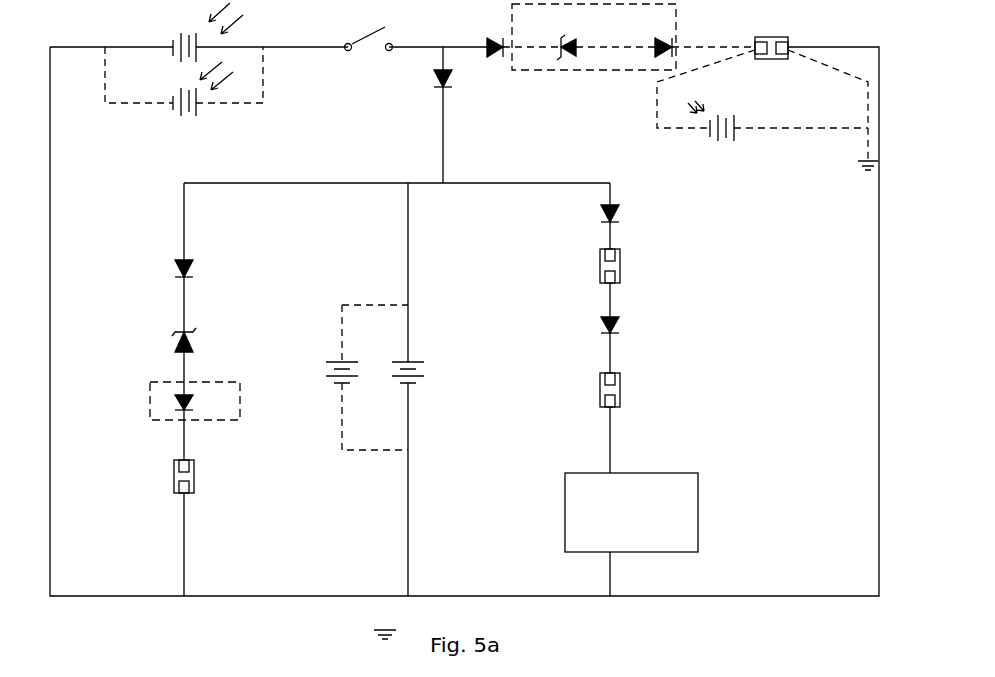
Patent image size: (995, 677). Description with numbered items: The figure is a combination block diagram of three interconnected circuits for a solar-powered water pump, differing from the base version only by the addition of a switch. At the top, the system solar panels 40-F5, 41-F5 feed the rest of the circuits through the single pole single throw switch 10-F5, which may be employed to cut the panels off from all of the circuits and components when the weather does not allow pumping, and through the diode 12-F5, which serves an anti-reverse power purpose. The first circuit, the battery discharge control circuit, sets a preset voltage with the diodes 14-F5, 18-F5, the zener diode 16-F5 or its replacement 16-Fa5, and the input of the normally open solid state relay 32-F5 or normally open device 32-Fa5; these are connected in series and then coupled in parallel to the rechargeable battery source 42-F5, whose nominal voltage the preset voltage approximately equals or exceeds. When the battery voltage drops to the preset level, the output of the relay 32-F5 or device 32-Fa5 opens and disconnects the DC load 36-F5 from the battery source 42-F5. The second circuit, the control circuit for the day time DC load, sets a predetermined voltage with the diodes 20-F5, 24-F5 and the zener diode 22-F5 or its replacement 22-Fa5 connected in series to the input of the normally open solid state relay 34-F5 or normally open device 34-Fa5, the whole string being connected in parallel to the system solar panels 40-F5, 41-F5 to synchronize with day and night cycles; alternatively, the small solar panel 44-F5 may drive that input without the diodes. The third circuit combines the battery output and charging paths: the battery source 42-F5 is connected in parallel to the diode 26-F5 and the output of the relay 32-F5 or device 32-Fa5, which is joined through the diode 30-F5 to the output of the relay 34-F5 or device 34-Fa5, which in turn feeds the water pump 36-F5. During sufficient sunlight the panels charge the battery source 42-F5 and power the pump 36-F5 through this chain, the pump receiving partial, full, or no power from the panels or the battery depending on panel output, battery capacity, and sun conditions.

The system solar panel 40-F5 is at (141, 32).
The system solar panel 41-F5 is at (184, 90).
The switch 10-F5 is at (371, 28).
The diode 12-F5 is at (420, 79).
The diode 20-F5 is at (485, 37).
The zener diode 22-F5 is at (594, 37).
The replacement of the zener diode 22-Fa5 is at (594, 37).
The diode 24-F5 is at (655, 37).
The normally open solid state relay 34-F5 is at (738, 210).
The normally open device 34-Fa5 is at (738, 210).
The small solar panel 44-F5 is at (767, 110).
The diode 14-F5 is at (205, 269).
The zener diode 16-F5 is at (231, 340).
The replacement of the zener diode 16-Fa5 is at (231, 340).
The diode 18-F5 is at (195, 401).
The normally open solid state relay 32-F5 is at (449, 374).
The normally open device 32-Fa5 is at (449, 374).
The rechargeable battery source 42-F5 is at (398, 377).
The diode 26-F5 is at (636, 214).
The diode 30-F5 is at (636, 327).
The DC load / water pump 36-F5 is at (665, 512).